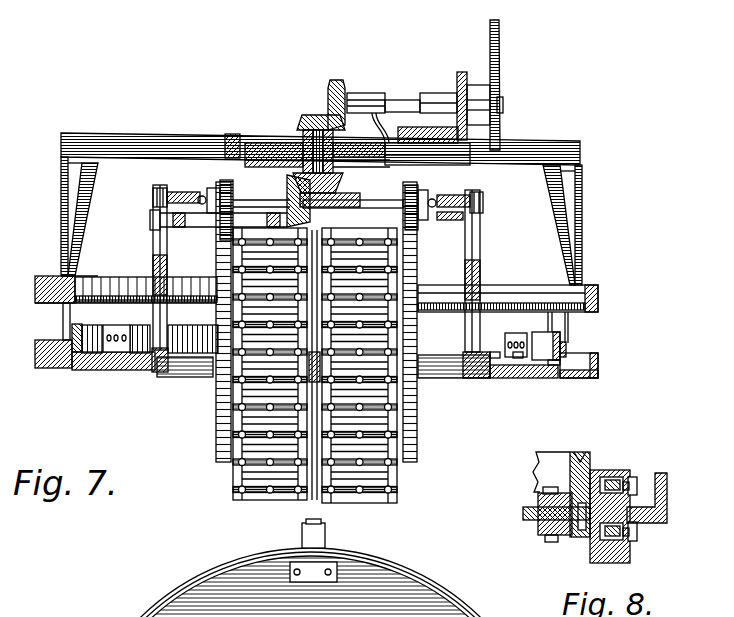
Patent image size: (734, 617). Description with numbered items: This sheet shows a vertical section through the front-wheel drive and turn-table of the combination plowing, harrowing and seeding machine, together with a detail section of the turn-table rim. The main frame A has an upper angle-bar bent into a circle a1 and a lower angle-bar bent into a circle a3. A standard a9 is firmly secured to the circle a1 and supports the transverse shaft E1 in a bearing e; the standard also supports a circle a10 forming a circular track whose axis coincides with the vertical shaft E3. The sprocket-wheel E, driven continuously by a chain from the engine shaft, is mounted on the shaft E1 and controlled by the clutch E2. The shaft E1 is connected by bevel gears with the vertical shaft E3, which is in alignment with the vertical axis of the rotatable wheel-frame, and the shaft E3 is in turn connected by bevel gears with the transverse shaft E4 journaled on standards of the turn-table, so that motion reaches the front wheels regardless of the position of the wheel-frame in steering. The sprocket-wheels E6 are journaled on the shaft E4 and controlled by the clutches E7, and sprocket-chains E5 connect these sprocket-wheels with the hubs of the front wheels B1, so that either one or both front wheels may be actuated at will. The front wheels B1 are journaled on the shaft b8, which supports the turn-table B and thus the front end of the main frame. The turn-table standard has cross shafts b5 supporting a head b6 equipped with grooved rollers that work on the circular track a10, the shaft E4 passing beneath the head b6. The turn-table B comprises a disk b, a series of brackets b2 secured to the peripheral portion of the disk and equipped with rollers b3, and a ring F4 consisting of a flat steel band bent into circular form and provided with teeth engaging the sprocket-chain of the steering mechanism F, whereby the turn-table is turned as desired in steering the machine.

In FIG. 7, the standard a9 is at (61, 196).
In FIG. 7, the circle a10 is at (233, 133).
In FIG. 7, the circle portion of upper angle-bar a1 is at (600, 296).
In FIG. 7, the circle portion of lower frame member a3 is at (600, 360).
In FIG. 7, the bearing e is at (363, 96).
In FIG. 7, the sprocket-wheel E is at (463, 72).
In FIG. 7, the transverse shaft E1 is at (397, 105).
In FIG. 7, the clutch E2 is at (490, 86).
In FIG. 7, the vertical shaft E3 is at (305, 143).
In FIG. 7, the transverse shaft E4 is at (362, 207).
In FIG. 7, the sprocket-chains E5 is at (220, 245).
In FIG. 7, the sprocket-wheels E6 is at (227, 186).
In FIG. 7, the clutches E7 is at (210, 190).
In FIG. 7, the head b6 is at (270, 165).
In FIG. 7, the cross shafts b5 is at (472, 252).
In FIG. 7, the brackets b2 is at (516, 343).
In FIG. 8, the brackets b2 is at (540, 497).
In FIG. 7, the toothed ring F4 is at (560, 340).
In FIG. 8, the toothed ring F4 is at (585, 450).
In FIG. 7, the shaft b8 is at (456, 378).
In FIG. 7, the turn-table B is at (512, 378).
In FIG. 8, the turn-table B is at (531, 520).
In FIG. 7, the disk b is at (556, 380).
In FIG. 8, the disk b is at (524, 512).
In FIG. 7, the front wheels B1 is at (233, 492).
In FIG. 8, the steering mechanism F is at (600, 470).
In FIG. 8, the rollers b3 is at (630, 472).
In FIG. 8, the main frame A is at (668, 506).